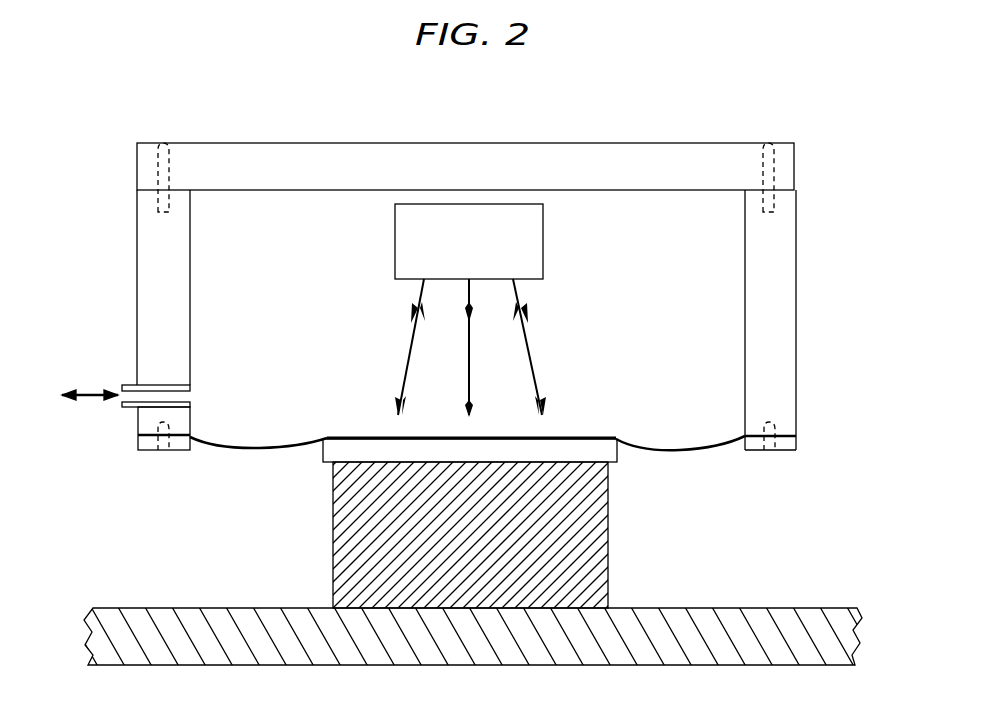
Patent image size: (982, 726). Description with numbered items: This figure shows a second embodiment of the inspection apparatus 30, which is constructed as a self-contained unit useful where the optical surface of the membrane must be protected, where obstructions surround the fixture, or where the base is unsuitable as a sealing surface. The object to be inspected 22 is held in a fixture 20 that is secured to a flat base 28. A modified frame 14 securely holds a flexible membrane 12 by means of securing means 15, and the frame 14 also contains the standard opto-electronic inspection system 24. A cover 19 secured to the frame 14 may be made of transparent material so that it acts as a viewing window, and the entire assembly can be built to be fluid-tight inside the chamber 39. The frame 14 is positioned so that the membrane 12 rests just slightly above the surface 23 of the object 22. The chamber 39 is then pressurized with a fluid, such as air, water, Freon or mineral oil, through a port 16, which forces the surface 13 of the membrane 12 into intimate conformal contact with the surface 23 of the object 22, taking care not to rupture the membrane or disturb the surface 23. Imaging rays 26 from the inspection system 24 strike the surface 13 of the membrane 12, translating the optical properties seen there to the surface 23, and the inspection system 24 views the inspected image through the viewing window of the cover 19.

The flexible membrane 12 is at (683, 441).
The membrane surface 13 is at (577, 438).
The frame 14 is at (185, 277).
The securing means 15 is at (162, 143).
The port 16 is at (126, 385).
The cover 19 is at (325, 149).
The object holding fixture 20 is at (607, 568).
The object to be inspected 22 is at (617, 455).
The object surface 23 is at (333, 468).
The opto-electronic inspection system 24 is at (543, 228).
The imaging rays 26 is at (527, 333).
The base 28 is at (157, 608).
The apparatus 30 is at (124, 266).
The chamber 39 is at (333, 327).